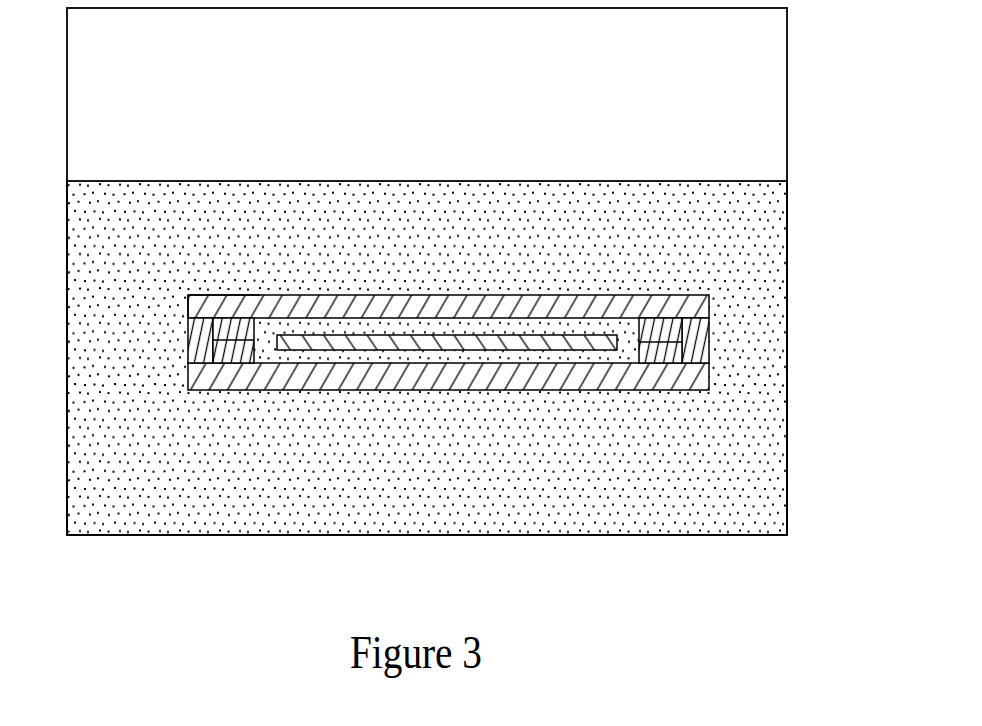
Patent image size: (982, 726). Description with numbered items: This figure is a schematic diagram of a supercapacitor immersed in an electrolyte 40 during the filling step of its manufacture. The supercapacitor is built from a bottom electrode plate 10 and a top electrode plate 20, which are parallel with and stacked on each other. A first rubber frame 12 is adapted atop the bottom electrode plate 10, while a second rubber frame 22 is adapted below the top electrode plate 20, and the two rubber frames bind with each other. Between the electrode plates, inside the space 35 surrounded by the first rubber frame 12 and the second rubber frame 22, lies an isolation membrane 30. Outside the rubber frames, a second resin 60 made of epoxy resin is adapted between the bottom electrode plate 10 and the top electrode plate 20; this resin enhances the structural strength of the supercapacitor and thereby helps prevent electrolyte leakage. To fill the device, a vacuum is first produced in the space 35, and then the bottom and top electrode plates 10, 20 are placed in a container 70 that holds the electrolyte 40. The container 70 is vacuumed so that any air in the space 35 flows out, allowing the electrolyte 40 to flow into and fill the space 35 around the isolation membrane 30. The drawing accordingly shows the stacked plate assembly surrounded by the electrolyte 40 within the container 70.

The bottom electrode plate 10 is at (188, 376).
The first rubber frame 12 is at (221, 352).
The top electrode plate 20 is at (478, 298).
The second rubber frame 22 is at (211, 299).
The isolation membrane 30 is at (607, 345).
The space 35 is at (302, 311).
The electrolyte 40 is at (368, 205).
The second resin 60 is at (200, 347).
The container 70 is at (787, 50).